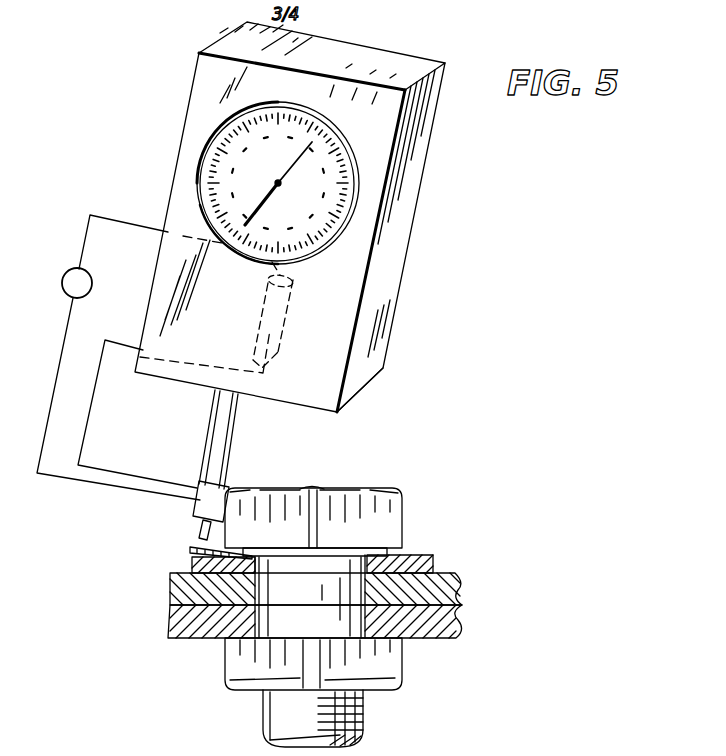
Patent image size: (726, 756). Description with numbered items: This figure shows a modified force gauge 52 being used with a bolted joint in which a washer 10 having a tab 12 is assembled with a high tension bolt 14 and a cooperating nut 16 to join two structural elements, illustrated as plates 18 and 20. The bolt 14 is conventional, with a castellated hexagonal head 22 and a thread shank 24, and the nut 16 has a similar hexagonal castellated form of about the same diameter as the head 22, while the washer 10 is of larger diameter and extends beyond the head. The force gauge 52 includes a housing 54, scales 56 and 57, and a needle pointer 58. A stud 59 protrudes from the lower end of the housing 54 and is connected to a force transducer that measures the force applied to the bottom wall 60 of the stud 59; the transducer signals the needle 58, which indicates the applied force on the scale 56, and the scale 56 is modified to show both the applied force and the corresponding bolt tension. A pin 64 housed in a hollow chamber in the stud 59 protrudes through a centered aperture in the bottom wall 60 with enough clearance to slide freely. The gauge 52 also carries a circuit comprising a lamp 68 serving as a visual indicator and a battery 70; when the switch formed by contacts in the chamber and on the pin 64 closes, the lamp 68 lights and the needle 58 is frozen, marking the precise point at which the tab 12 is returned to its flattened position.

The washer 10 is at (437, 562).
The tab 12 is at (186, 553).
The high tension bolt 14 is at (405, 520).
The nut 16 is at (390, 660).
The plate 18 is at (440, 585).
The plate 20 is at (448, 619).
The castellated hexagonal head 22 is at (355, 502).
The thread shank 24 is at (347, 708).
The force gauge 52 is at (447, 258).
The housing 54 is at (384, 324).
The scale 56 is at (243, 150).
The scale 57 is at (305, 118).
The needle pointer 58 is at (303, 157).
The stud 59 is at (210, 466).
The bottom wall 60 is at (198, 524).
The pin 64 is at (200, 534).
The lamp 68 is at (66, 276).
The battery 70 is at (290, 344).